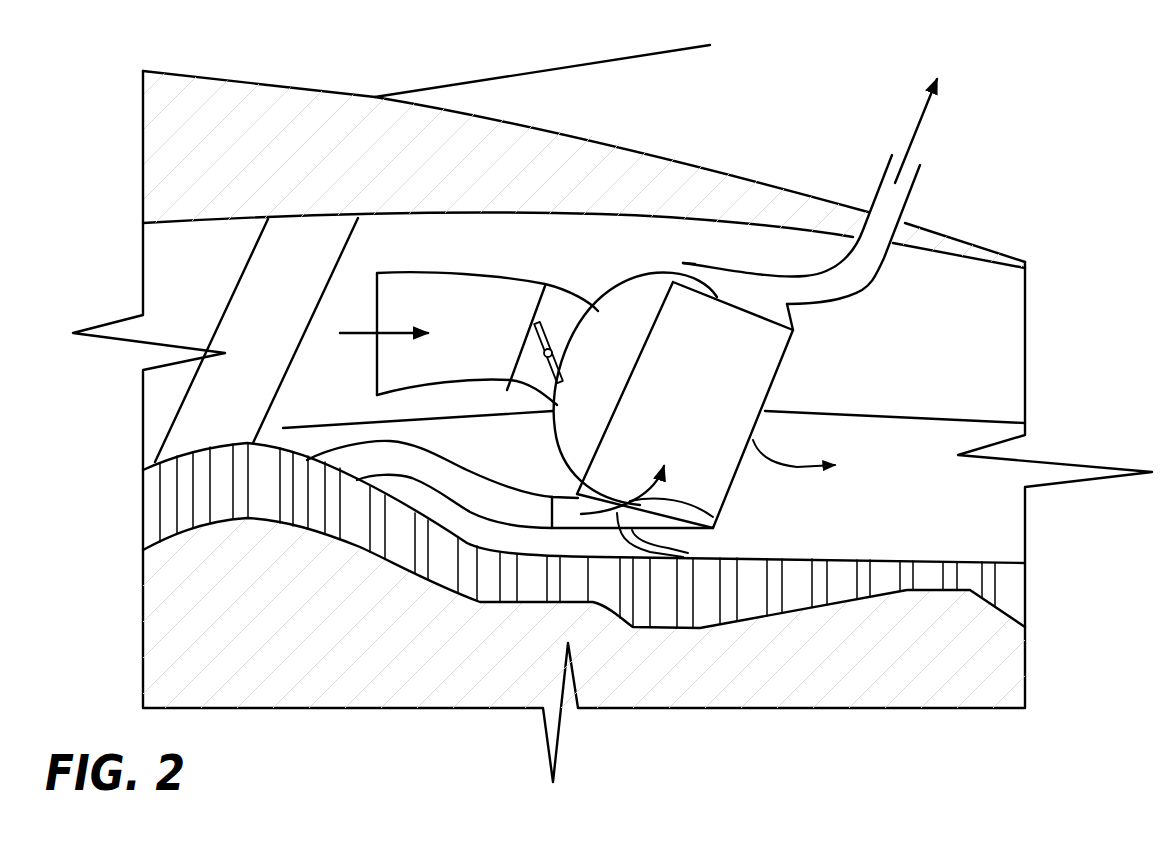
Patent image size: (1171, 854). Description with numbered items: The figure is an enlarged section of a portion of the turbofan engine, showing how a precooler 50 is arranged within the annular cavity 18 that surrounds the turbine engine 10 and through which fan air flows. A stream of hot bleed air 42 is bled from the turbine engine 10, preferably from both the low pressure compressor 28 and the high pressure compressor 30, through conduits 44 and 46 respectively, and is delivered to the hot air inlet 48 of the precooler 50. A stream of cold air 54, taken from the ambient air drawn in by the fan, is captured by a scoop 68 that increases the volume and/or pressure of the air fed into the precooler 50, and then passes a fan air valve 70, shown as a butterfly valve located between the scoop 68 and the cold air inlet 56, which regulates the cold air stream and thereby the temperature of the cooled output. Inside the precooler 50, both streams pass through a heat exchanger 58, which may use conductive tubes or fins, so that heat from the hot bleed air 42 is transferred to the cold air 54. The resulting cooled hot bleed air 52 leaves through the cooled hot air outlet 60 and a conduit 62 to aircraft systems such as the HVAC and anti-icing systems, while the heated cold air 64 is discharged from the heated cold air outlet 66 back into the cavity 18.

The turbine engine 10 is at (940, 692).
The annular cavity 18 is at (462, 259).
The low pressure compressor 28 is at (305, 518).
The high pressure compressor 30 is at (698, 618).
The hot bleed air 42 is at (583, 514).
The conduit 44 is at (455, 506).
The conduit 46 is at (617, 558).
The hot air inlet 48 is at (713, 517).
The precooler 50 is at (670, 396).
The cooled hot bleed air 52 is at (922, 135).
The cold air 54 is at (360, 333).
The cold air inlet 56 is at (578, 358).
The heat exchanger 58 is at (770, 350).
The cooled hot air outlet 60 is at (690, 268).
The conduit 62 is at (880, 270).
The heated cold air 64 is at (797, 467).
The heated cold air outlet 66 is at (753, 440).
The scoop 68 is at (402, 286).
The fan air valve 70 is at (522, 387).